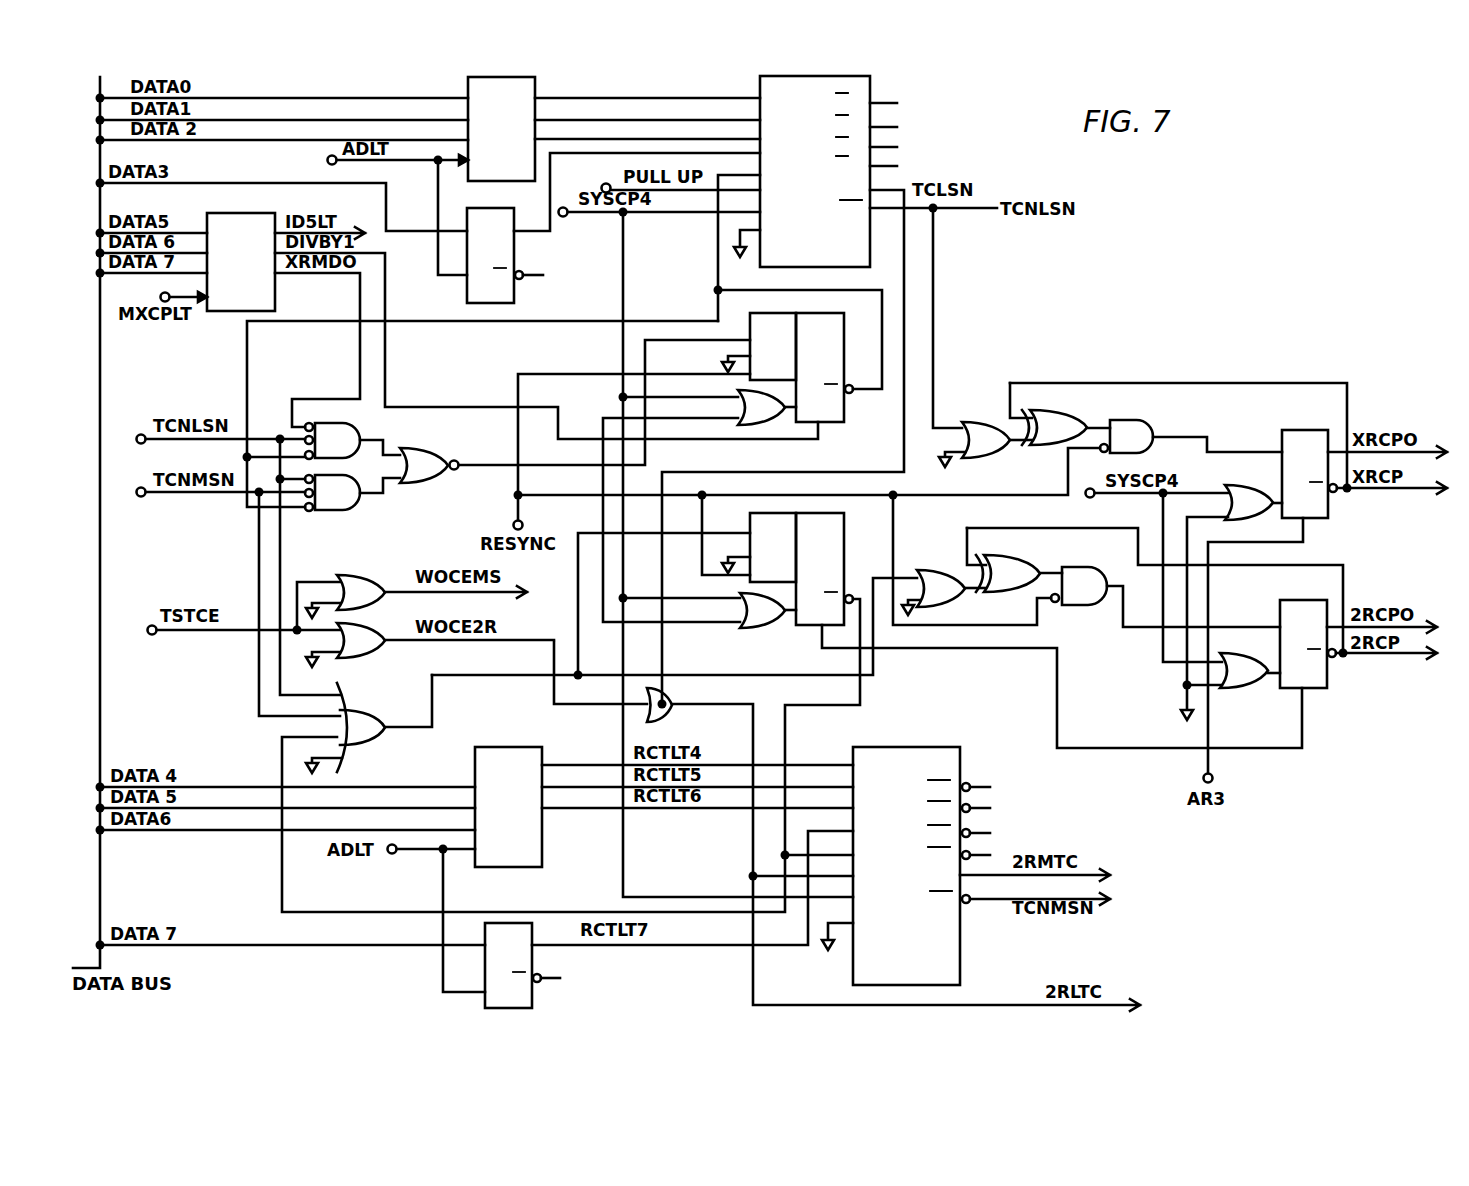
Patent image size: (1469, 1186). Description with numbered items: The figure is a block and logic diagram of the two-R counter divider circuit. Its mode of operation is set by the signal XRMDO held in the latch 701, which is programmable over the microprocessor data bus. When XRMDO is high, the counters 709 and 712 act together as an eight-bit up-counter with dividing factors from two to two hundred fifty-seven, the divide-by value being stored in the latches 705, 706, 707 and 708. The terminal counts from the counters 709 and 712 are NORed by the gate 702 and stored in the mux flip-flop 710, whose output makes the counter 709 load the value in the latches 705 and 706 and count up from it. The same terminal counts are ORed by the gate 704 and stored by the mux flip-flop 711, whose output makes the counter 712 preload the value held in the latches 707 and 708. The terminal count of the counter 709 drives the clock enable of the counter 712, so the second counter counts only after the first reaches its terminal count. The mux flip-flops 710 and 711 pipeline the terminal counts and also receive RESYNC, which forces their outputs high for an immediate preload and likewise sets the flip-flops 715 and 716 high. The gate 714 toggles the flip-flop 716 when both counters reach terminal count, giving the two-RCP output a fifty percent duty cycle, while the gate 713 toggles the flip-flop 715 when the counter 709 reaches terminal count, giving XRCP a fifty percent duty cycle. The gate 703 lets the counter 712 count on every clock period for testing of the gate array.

The latch 701 is at (217, 313).
The gate 702 is at (402, 503).
The gate 703 is at (387, 660).
The gate 704 is at (388, 746).
The latch 705 is at (535, 88).
The latch 706 is at (514, 244).
The latch 707 is at (498, 744).
The latch 708 is at (533, 995).
The counter 709 is at (870, 88).
The mux flip-flop 710 is at (844, 415).
The mux flip-flop 711 is at (798, 628).
The counter 712 is at (943, 747).
The gate 713 is at (998, 398).
The gate 714 is at (948, 551).
The flip-flop 715 is at (1278, 435).
The flip-flop 716 is at (1335, 680).